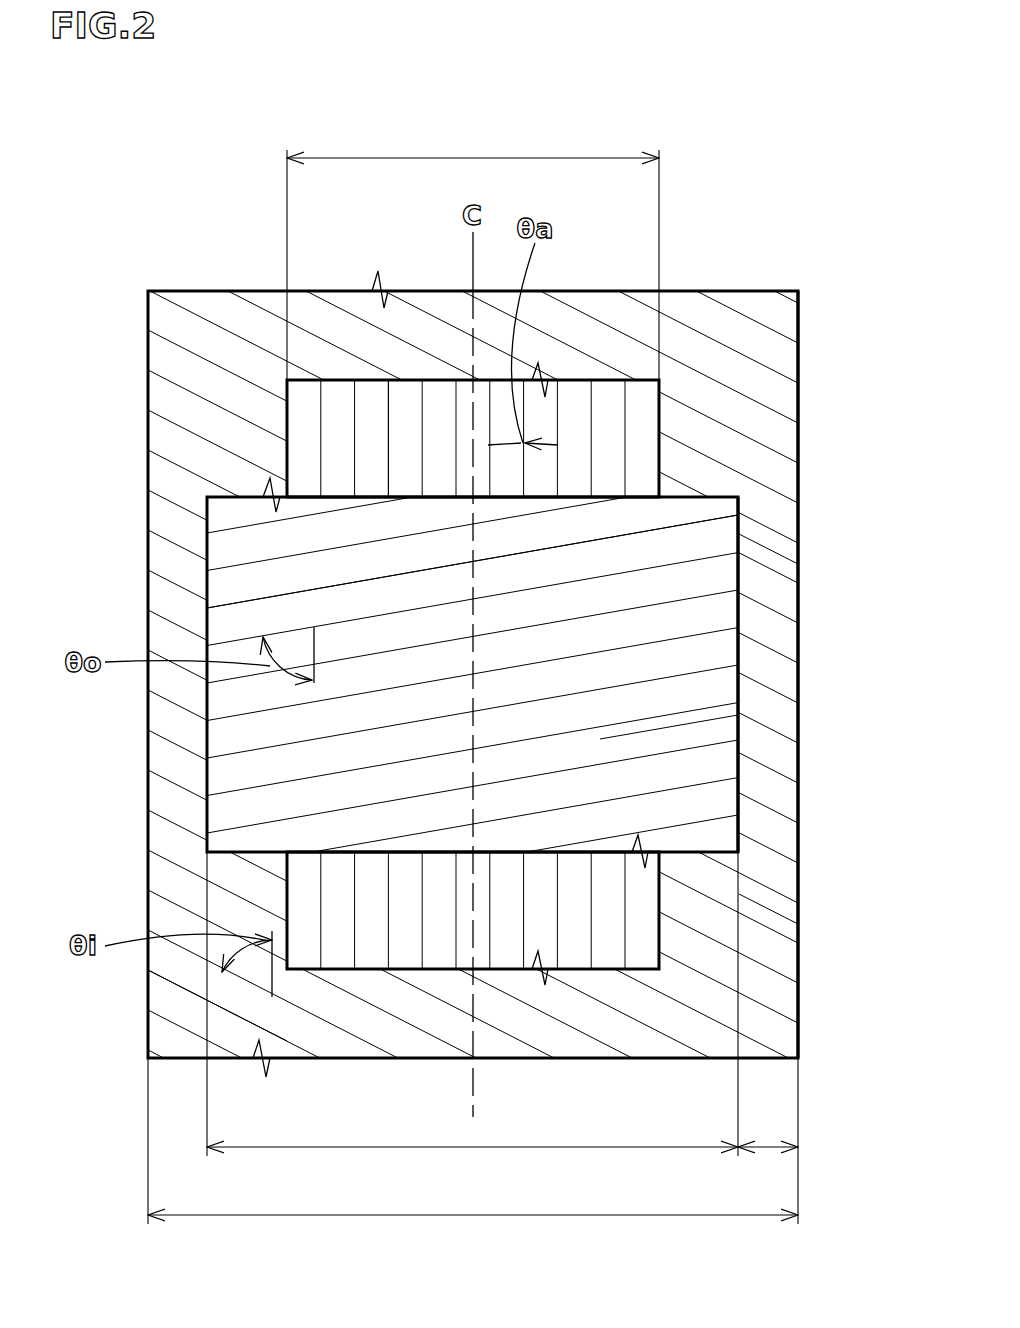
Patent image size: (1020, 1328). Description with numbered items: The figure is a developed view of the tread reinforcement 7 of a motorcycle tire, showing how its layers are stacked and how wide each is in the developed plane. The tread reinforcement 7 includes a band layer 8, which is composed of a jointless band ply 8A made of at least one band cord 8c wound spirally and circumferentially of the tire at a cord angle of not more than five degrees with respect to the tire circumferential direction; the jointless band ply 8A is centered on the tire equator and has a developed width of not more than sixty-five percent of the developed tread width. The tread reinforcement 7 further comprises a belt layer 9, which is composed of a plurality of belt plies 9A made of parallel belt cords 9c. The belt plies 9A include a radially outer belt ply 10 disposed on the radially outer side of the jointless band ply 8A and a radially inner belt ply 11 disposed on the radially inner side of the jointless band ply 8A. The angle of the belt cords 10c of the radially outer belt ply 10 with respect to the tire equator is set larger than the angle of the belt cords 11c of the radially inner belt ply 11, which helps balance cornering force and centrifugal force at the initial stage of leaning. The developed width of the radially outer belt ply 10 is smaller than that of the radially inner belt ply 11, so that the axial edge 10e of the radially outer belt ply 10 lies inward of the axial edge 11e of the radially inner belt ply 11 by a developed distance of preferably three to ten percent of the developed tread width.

The tread reinforcement 7 is at (818, 243).
The band layer 8 is at (346, 440).
The jointless band ply 8A is at (573, 436).
The band cord 8c is at (388, 413).
The belt layer 9 is at (729, 288).
The belt plies 9A is at (769, 559).
The belt cords 9c is at (762, 931).
The radially outer belt ply 10 is at (205, 538).
The belt cords of the radially outer belt ply 10c is at (273, 597).
The axial edge of the radially outer belt ply 10e is at (739, 618).
The radially inner belt ply 11 is at (146, 345).
The belt cords of the radially inner belt ply 11c is at (193, 1002).
The axial edge of the radially inner belt ply 11e is at (800, 1023).